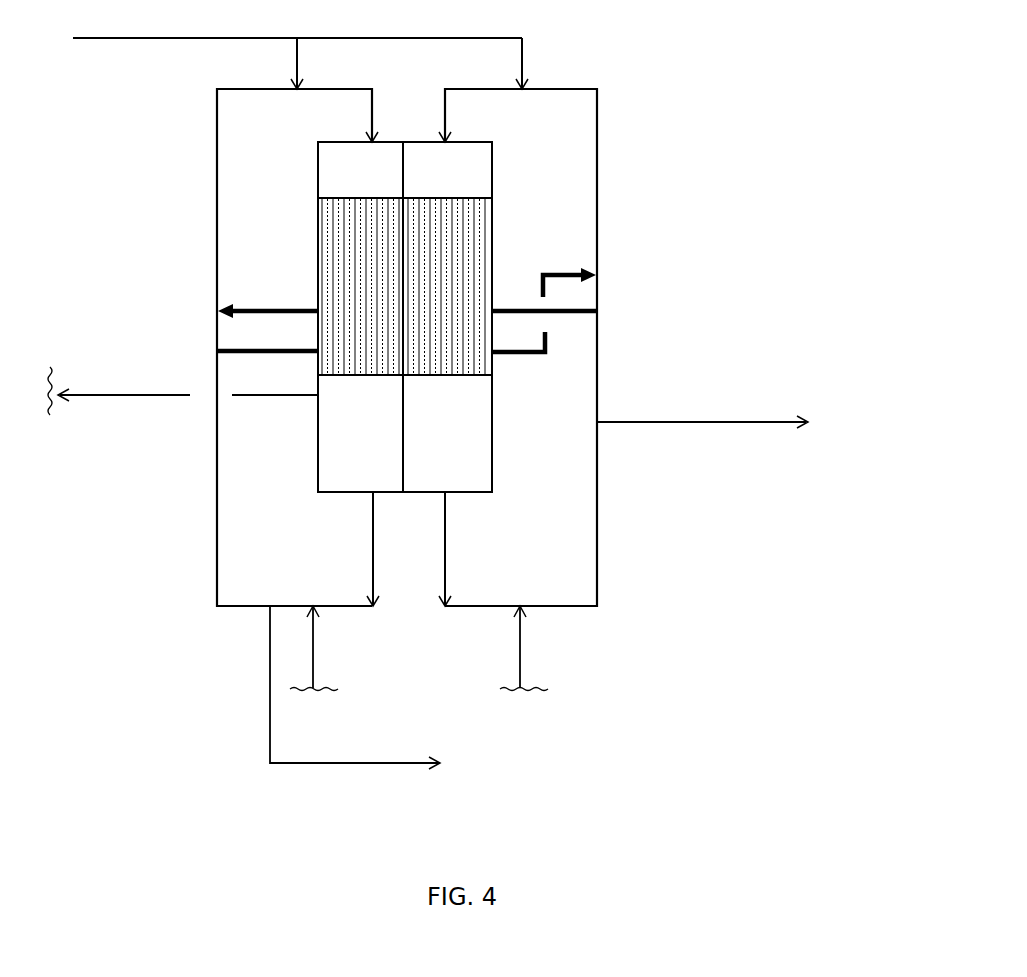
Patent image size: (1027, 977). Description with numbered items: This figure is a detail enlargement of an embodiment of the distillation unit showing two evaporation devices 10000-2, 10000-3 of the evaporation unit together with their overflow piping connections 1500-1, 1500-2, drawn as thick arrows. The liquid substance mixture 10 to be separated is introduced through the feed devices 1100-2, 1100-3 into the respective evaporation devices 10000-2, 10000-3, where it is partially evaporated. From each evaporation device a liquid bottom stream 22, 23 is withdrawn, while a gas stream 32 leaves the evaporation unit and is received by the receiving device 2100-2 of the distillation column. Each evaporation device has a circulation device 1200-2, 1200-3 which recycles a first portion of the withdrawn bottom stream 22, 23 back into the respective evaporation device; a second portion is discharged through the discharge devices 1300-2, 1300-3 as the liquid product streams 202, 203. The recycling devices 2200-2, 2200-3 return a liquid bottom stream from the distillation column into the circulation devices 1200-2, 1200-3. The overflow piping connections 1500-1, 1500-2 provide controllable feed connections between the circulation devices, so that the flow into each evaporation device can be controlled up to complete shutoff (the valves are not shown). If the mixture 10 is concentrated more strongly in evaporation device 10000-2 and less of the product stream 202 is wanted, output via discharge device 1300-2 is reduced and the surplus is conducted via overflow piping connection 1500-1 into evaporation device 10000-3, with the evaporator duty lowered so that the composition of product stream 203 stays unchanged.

The liquid substance mixture 10 is at (278, 38).
The feed device 1100-2 is at (286, 66).
The feed device 1100-3 is at (522, 63).
The circulation device 1200-2 is at (217, 228).
The circulation device 1200-3 is at (597, 195).
The device for receiving gas stream 2100-2 is at (130, 395).
The overflow piping connection 1500-1 is at (272, 353).
The overflow piping connection 1500-2 is at (573, 312).
The evaporation device 10000-2 is at (342, 435).
The evaporation device 10000-3 is at (455, 442).
The gas stream 32 is at (360, 391).
The liquid bottom stream 22 is at (375, 536).
The liquid bottom stream 23 is at (443, 536).
The liquid product stream 203 is at (776, 420).
The discharge device 1300-3 is at (717, 422).
The liquid product stream 202 is at (418, 761).
The discharge device 1300-2 is at (323, 763).
The device for recycling liquid bottom stream 2200-2 is at (313, 638).
The device for recycling liquid bottom stream 2200-3 is at (520, 640).